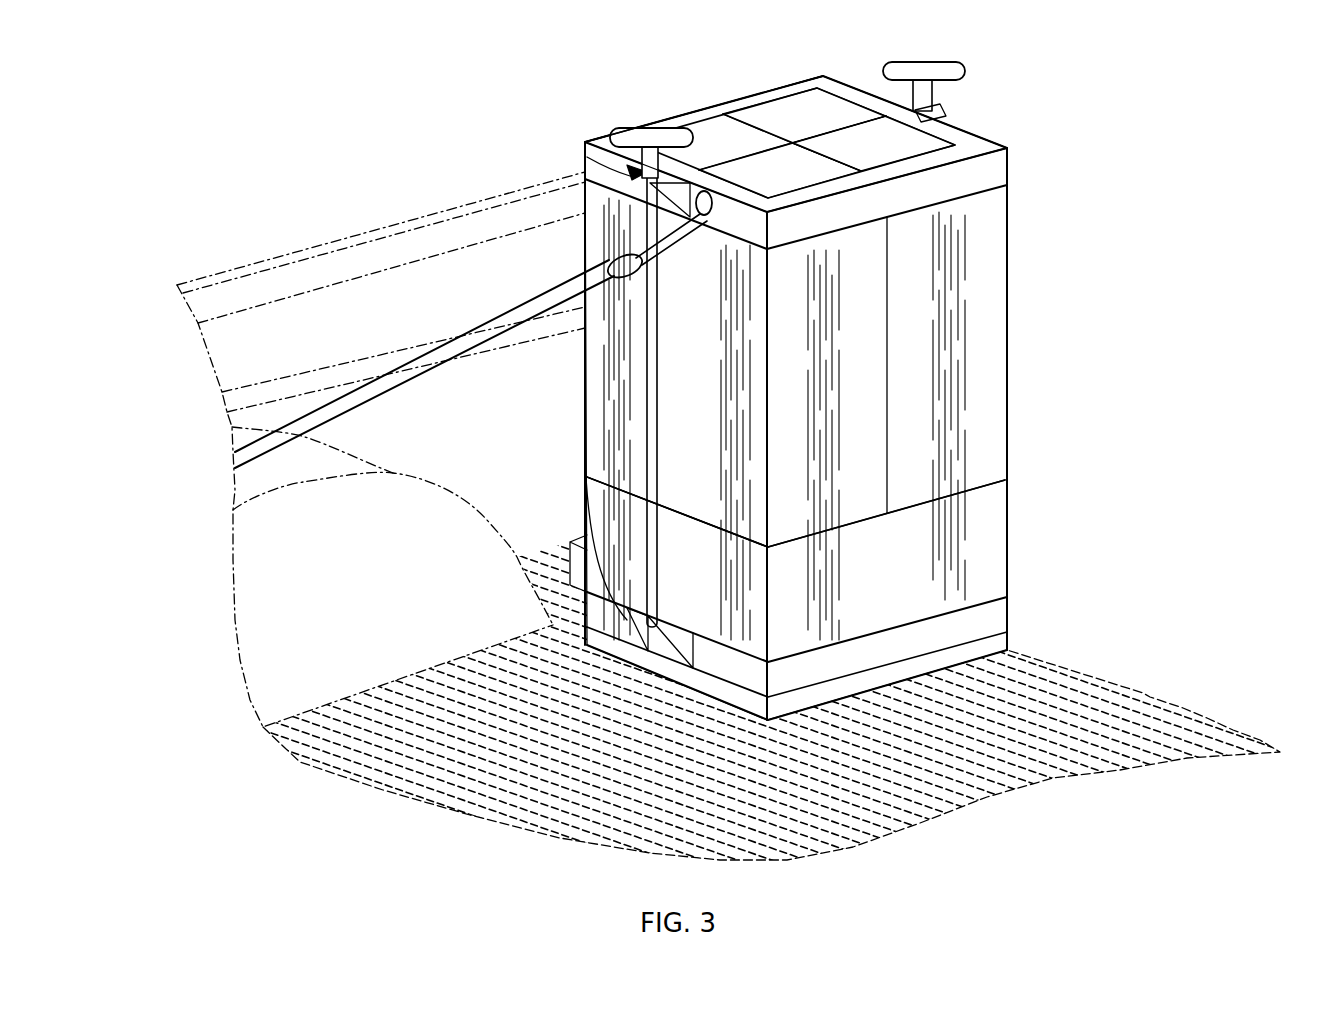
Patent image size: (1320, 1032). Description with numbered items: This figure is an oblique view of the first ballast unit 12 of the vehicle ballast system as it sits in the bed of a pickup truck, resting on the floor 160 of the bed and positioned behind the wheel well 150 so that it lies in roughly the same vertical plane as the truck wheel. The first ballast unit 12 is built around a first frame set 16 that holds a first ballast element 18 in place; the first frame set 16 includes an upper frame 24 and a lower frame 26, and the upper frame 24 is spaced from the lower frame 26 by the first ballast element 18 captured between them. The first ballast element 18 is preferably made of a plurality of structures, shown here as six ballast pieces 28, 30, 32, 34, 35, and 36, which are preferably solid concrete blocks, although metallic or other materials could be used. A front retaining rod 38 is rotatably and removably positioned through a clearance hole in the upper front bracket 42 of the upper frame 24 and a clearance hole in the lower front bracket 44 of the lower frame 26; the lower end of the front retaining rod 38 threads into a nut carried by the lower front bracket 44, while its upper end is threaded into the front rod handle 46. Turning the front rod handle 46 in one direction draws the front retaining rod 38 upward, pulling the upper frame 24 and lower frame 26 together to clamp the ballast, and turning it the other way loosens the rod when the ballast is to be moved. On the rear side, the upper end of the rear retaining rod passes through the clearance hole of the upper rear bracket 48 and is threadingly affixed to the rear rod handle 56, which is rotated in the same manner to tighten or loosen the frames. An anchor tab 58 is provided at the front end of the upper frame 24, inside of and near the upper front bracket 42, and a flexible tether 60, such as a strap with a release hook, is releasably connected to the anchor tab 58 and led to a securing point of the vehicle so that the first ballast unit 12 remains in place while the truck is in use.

The first ballast unit 12 is at (566, 116).
The first frame set 16 is at (1088, 116).
The first ballast element 18 is at (1090, 362).
The upper frame 24 is at (1007, 158).
The lower frame 26 is at (1010, 606).
The ballast piece 28 is at (700, 130).
The ballast piece 30 is at (827, 105).
The ballast piece 32 is at (917, 145).
The ballast piece 34 is at (752, 162).
The ballast piece 35 is at (592, 492).
The ballast piece 36 is at (1005, 525).
The front retaining rod 38 is at (640, 345).
The upper front bracket 42 is at (587, 167).
The lower front bracket 44 is at (590, 540).
The front rod handle 46 is at (627, 135).
The upper rear bracket 48 is at (945, 113).
The rear rod handle 56 is at (942, 68).
The anchor tab 58 is at (715, 203).
The tether 60 is at (547, 305).
The wheel well 150 is at (374, 593).
The floor 160 is at (1143, 693).